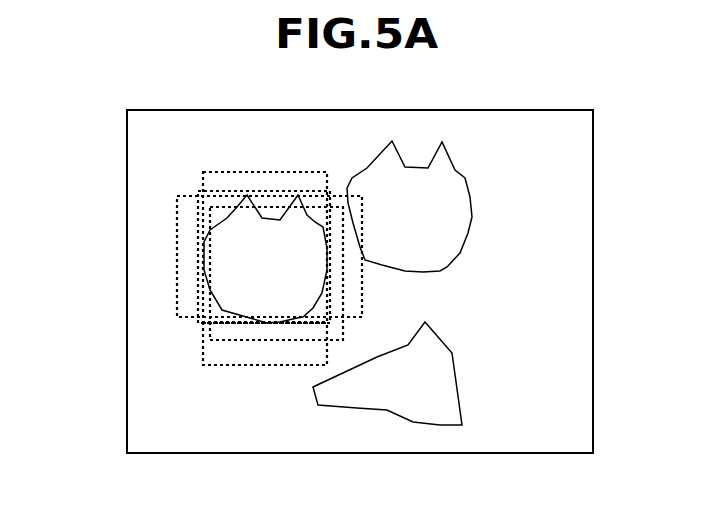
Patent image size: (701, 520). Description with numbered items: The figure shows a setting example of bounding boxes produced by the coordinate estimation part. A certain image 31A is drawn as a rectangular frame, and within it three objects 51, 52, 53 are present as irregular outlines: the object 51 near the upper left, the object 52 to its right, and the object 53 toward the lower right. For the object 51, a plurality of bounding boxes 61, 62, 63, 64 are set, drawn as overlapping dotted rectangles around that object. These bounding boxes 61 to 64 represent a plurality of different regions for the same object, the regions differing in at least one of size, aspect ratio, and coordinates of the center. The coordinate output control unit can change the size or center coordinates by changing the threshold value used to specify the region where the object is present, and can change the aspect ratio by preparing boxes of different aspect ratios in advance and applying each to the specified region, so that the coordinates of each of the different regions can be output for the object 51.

The image 31A is at (142, 110).
The object 51 is at (235, 197).
The object 52 is at (369, 165).
The object 53 is at (417, 422).
The bounding box 61 is at (203, 178).
The bounding box 62 is at (177, 214).
The bounding box 63 is at (198, 246).
The bounding box 64 is at (207, 335).